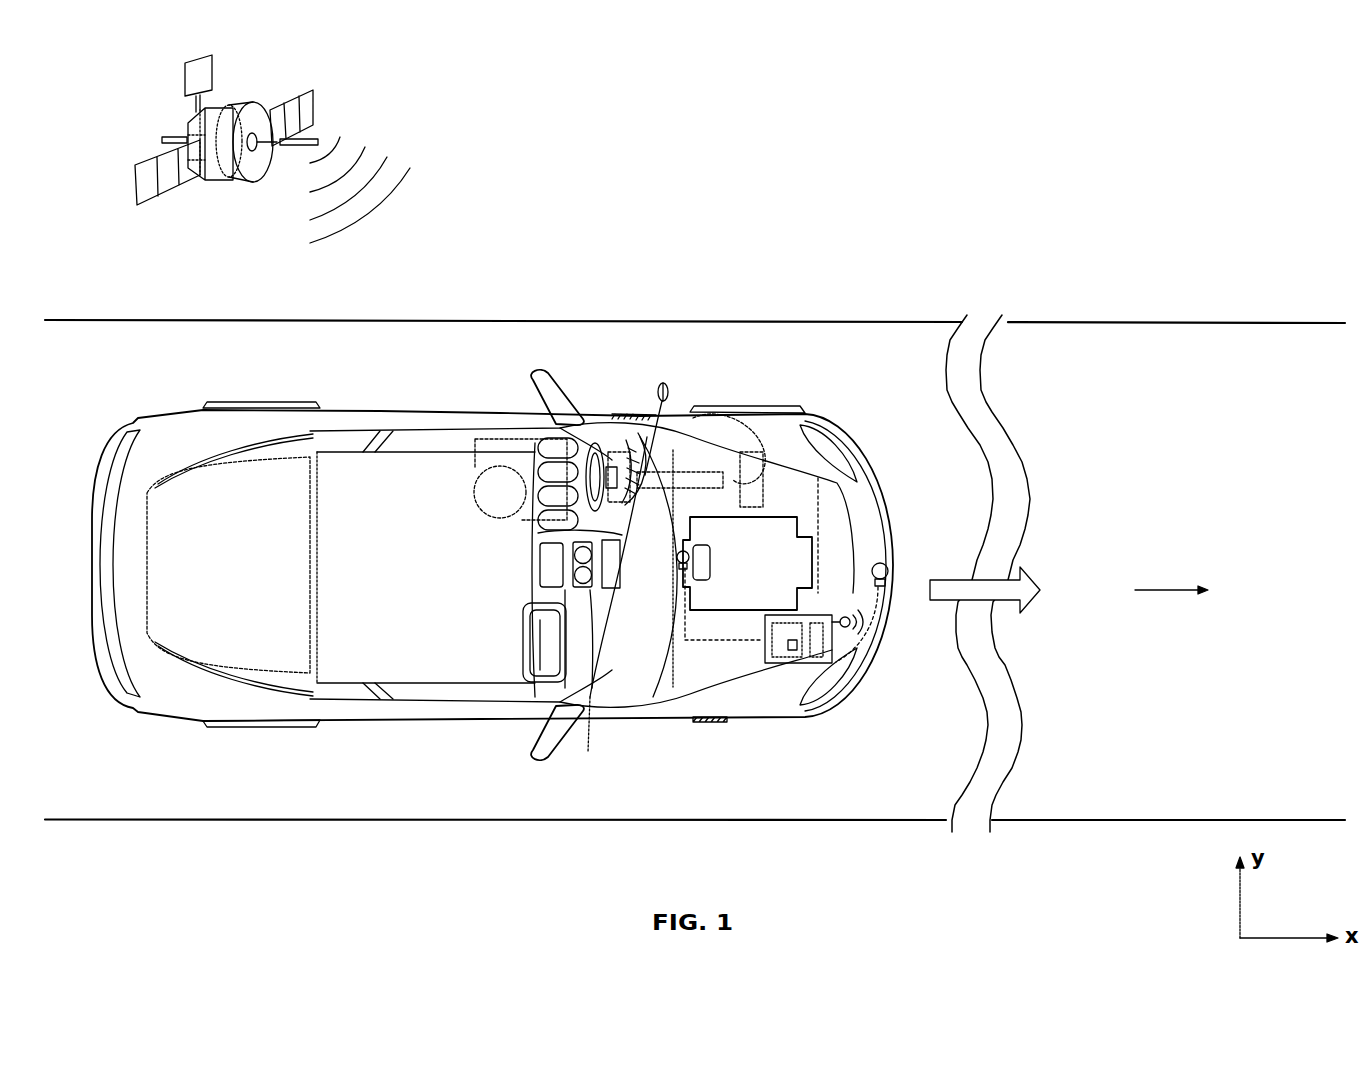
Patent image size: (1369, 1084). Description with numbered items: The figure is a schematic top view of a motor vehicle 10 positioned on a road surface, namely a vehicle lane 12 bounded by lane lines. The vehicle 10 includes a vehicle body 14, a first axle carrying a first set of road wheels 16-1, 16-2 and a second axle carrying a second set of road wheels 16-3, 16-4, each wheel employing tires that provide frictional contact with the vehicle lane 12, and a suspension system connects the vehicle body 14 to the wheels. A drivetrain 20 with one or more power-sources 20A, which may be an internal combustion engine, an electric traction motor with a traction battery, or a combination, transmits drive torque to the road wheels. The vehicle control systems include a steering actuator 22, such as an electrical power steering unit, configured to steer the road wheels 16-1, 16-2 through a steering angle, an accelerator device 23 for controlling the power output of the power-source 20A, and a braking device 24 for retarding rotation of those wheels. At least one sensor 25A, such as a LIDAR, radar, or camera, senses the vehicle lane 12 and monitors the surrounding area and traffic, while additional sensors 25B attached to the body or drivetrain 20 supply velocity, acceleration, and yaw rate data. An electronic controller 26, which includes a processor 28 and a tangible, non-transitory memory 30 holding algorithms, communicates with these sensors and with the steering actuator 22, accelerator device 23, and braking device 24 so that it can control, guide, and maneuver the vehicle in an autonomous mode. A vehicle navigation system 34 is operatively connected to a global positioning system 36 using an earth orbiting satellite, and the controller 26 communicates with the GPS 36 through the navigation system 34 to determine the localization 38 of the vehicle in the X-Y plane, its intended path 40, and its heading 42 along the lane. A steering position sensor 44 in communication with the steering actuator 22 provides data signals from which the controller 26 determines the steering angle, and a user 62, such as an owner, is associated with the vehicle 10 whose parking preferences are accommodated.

The motor vehicle 10 is at (515, 380).
The vehicle lane 12 is at (73, 361).
The vehicle body 14 is at (628, 413).
The road wheel 16-1 is at (805, 410).
The road wheel 16-2 is at (700, 723).
The road wheel 16-3 is at (245, 402).
The road wheel 16-4 is at (258, 727).
The drivetrain 20 is at (811, 559).
The power-source 20A is at (803, 602).
The steering actuator 22 is at (765, 462).
The accelerator device 23 is at (672, 493).
The braking device 24 is at (612, 450).
The sensor 25A is at (890, 569).
The sensor 25B is at (683, 563).
The electronic controller 26 is at (828, 690).
The processor 28 is at (795, 650).
The memory 30 is at (843, 676).
The vehicle navigation system 34 is at (589, 740).
The global positioning system 36 is at (320, 108).
The localization 38 is at (818, 658).
The intended path 40 is at (1178, 590).
The heading 42 is at (991, 616).
The steering position sensor 44 is at (740, 455).
The user 62 is at (480, 439).